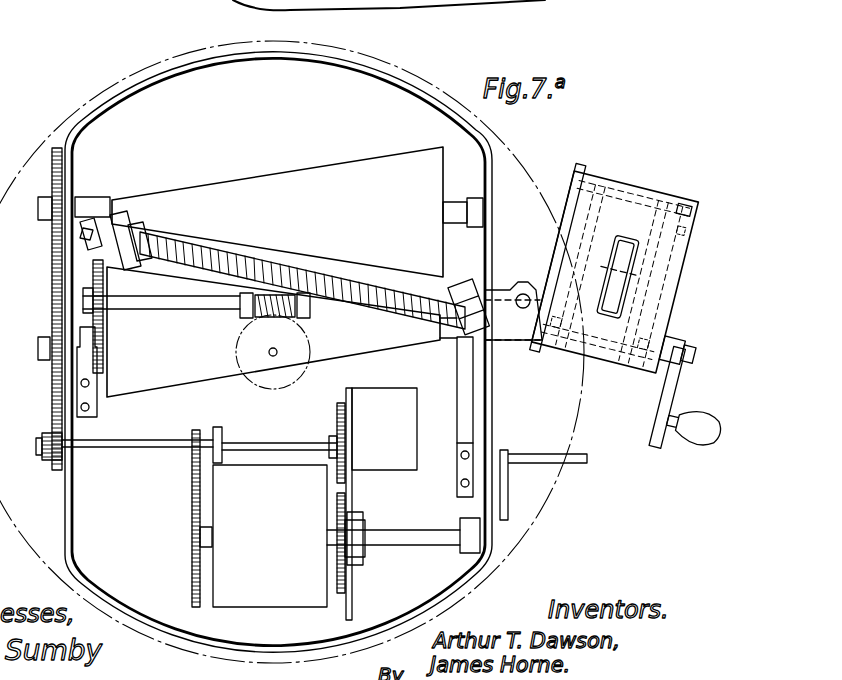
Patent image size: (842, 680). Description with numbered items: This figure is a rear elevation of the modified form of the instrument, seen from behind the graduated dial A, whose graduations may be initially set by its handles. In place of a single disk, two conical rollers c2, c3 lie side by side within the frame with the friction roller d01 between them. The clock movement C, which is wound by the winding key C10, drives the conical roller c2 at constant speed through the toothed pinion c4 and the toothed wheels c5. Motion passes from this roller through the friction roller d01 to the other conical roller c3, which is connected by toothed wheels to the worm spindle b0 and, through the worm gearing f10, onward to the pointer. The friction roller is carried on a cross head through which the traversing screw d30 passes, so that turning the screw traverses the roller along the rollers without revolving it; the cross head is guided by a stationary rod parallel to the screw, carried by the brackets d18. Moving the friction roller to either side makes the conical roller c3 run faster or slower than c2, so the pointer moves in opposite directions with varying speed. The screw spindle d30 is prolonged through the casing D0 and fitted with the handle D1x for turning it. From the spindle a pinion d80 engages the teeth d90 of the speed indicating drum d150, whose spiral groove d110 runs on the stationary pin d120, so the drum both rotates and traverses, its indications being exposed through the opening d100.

The graduated dial A is at (486, 137).
The toothed wheels c5 is at (46, 270).
The toothed pinion c4 is at (50, 456).
The clock movement C is at (270, 536).
The conical roller c2 is at (297, 212).
The conical roller c3 is at (282, 332).
The winding key C10 is at (558, 458).
The traversing screw d30 is at (190, 250).
The brackets d18 is at (100, 203).
The friction roller d01 is at (130, 217).
The worm spindle b0 is at (193, 303).
The worm f10 is at (310, 340).
The stationary pin d120 is at (573, 267).
The casing D0 is at (619, 272).
The speed indicating drum d150 is at (588, 198).
The opening d100 is at (617, 237).
The teeth d90 is at (693, 213).
The spiral groove d110 is at (637, 267).
The pinion d80 is at (673, 334).
The handle D1x is at (693, 403).